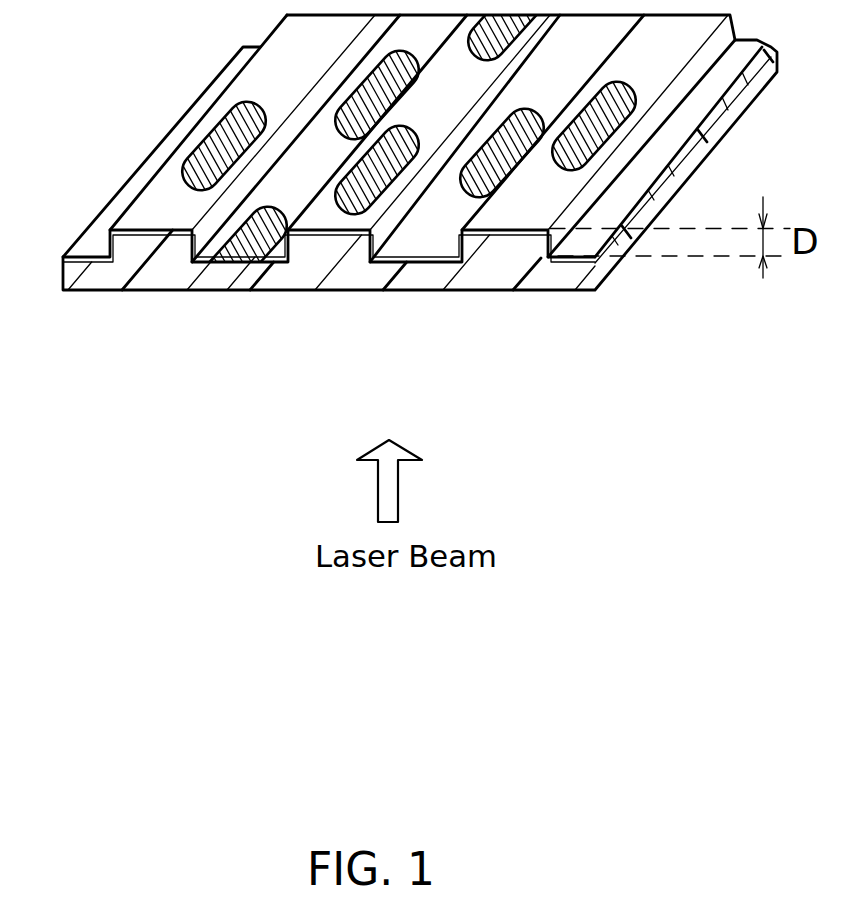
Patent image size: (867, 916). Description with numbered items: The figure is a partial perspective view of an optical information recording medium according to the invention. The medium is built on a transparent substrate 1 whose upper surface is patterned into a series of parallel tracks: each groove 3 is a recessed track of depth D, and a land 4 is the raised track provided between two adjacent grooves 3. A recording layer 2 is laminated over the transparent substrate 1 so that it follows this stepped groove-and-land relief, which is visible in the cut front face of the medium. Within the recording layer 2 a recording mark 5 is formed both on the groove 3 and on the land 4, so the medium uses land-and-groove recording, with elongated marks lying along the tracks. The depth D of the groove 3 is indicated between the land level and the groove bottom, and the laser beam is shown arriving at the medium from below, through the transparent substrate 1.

The transparent substrate 1 is at (553, 270).
The recording layer 2 is at (110, 218).
The groove 3 is at (240, 252).
The land 4 is at (318, 238).
The recording mark 5 is at (384, 86).